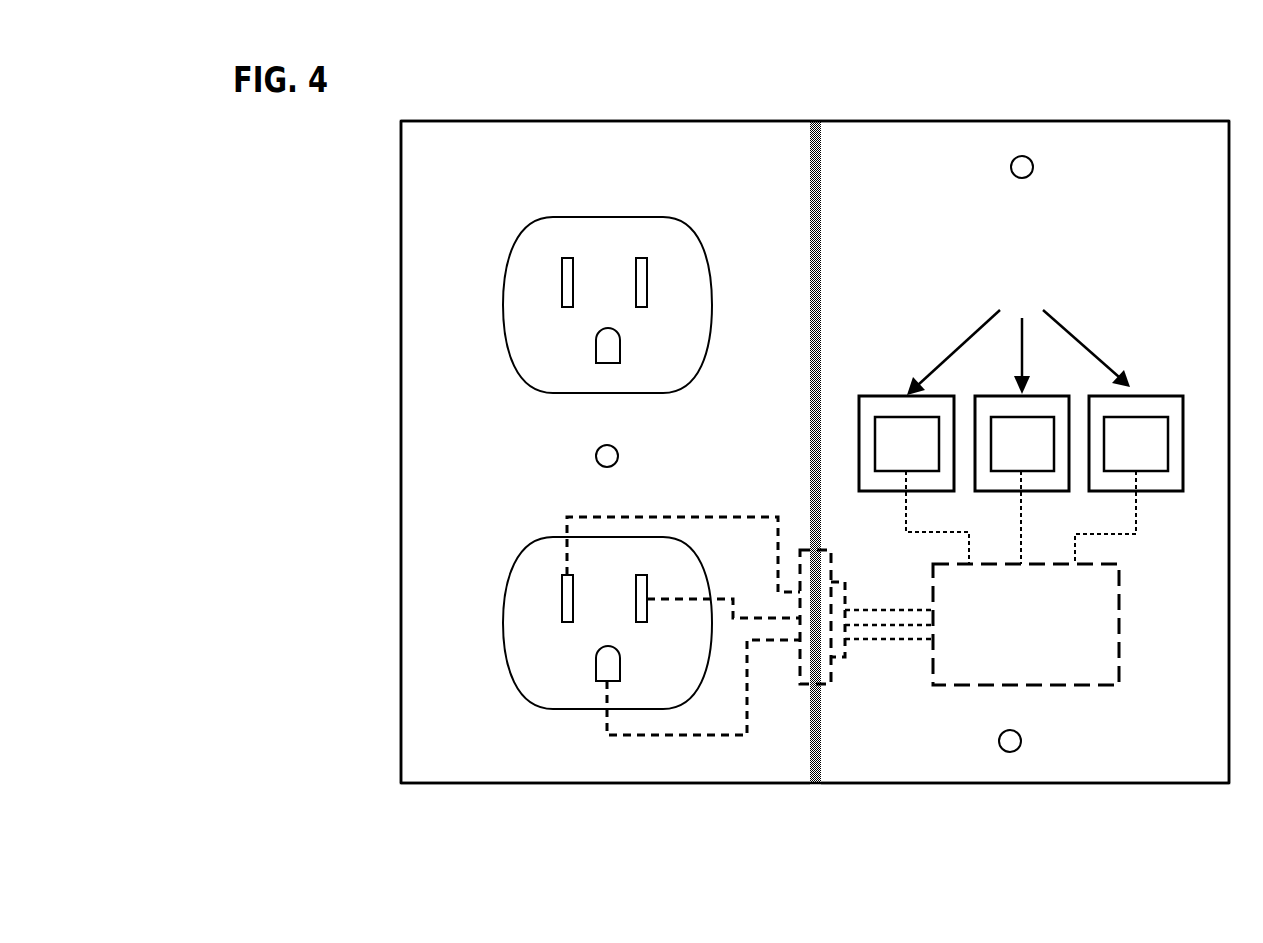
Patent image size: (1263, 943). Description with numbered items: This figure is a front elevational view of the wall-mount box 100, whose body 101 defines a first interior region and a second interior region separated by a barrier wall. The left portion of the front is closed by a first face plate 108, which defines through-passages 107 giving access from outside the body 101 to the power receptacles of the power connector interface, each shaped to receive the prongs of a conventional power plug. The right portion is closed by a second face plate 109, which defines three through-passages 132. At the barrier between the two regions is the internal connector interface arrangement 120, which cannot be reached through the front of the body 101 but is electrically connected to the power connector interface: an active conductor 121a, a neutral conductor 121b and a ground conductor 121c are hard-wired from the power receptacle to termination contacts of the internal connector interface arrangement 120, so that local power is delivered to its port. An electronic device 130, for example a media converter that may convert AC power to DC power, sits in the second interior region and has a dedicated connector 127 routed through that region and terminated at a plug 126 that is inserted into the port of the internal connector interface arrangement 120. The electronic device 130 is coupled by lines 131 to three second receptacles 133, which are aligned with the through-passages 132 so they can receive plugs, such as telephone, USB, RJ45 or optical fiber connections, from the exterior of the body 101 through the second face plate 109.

The wall-mount box 100 is at (1158, 110).
The body 101 is at (890, 118).
The through-passage 107 is at (645, 217).
The first face plate 108 is at (492, 748).
The second face plate 109 is at (1152, 746).
The internal connector interface arrangement 120 is at (831, 684).
The active conductor 121a is at (630, 517).
The neutral conductor 121b is at (672, 599).
The ground conductor 121c is at (635, 735).
The plug 126 is at (845, 592).
The dedicated connector 127 is at (875, 639).
The electronic device 130 is at (1026, 624).
The lines 131 is at (1019, 516).
The through-passage 132 is at (1018, 340).
The second receptacle 133 is at (1021, 443).